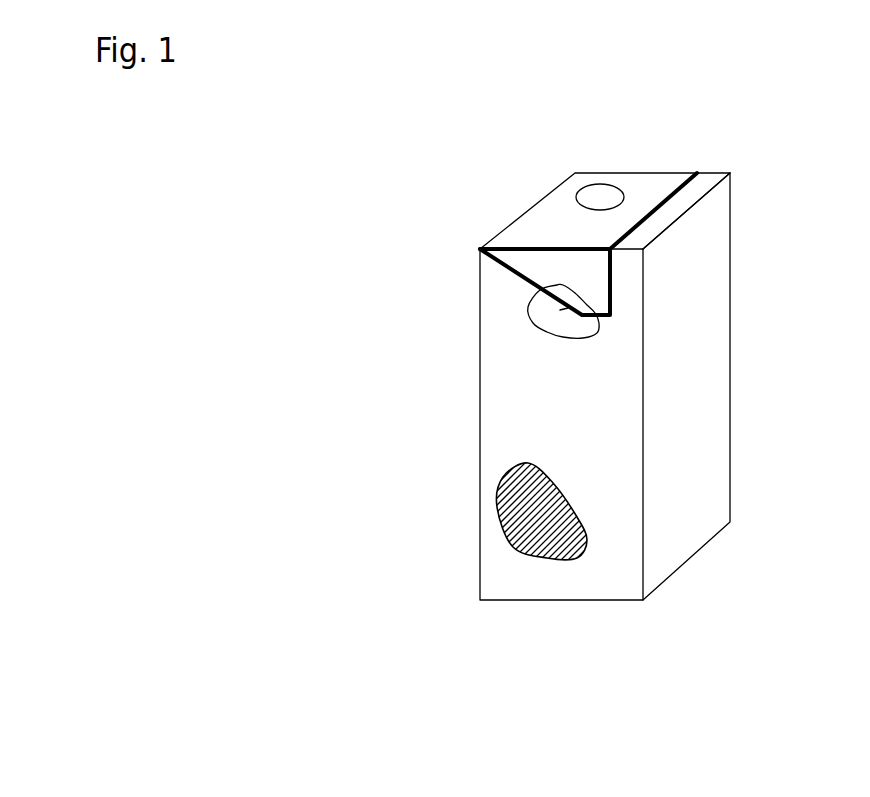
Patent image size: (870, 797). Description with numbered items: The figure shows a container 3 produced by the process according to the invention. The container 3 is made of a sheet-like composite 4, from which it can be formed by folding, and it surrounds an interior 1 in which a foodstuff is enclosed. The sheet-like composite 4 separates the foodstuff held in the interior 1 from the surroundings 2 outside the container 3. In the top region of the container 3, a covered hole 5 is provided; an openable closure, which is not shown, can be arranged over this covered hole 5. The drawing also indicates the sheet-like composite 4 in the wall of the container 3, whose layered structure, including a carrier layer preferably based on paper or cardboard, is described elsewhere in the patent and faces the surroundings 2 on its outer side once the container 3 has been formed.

The interior 1 is at (560, 309).
The surroundings 2 is at (514, 386).
The container 3 is at (547, 228).
The sheet-like composite 4 is at (673, 193).
The covered hole 5 is at (592, 183).